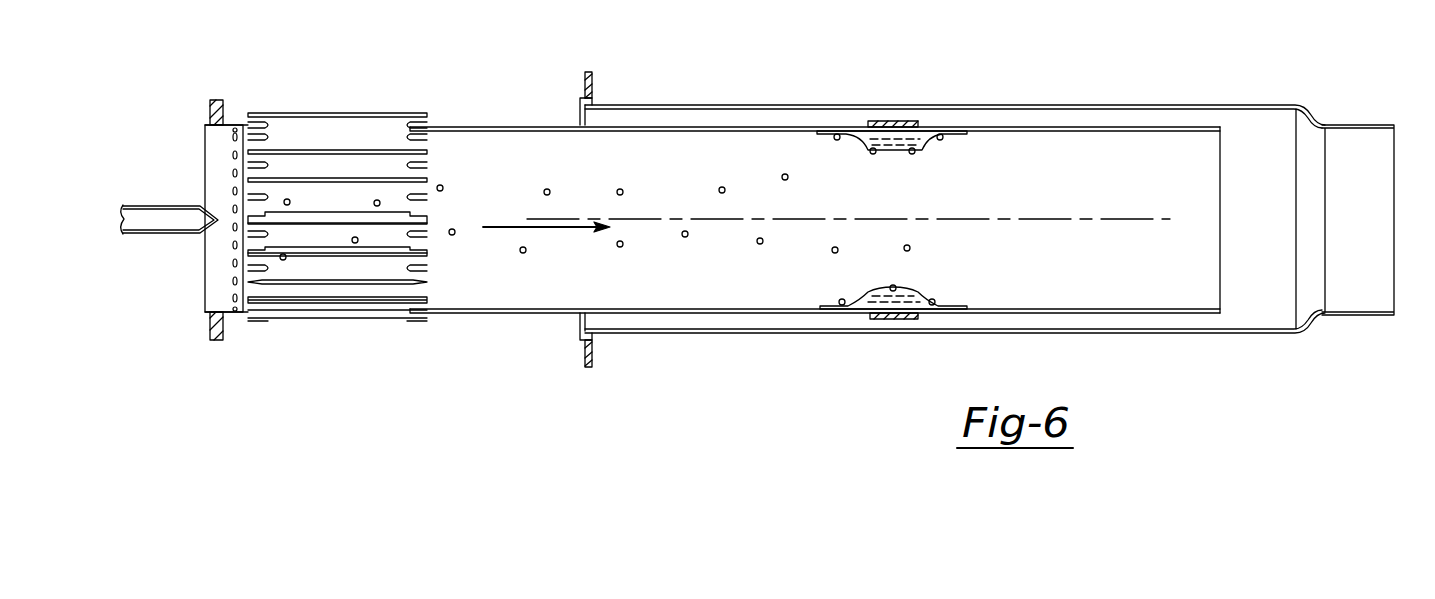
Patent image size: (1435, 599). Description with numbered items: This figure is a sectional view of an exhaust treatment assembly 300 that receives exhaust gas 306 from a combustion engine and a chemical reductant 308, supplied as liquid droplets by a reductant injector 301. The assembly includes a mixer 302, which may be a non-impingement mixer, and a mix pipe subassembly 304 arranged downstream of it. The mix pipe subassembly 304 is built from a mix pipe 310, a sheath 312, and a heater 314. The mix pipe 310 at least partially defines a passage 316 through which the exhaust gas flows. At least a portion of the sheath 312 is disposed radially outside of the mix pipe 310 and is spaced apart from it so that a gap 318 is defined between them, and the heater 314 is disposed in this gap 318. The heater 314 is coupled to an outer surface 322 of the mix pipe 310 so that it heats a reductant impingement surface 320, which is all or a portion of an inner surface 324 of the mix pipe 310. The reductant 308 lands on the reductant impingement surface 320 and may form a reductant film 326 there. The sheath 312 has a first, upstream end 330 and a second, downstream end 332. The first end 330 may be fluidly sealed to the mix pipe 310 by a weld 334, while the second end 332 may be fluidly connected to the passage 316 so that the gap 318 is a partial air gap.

The exhaust treatment assembly 300 is at (1259, 62).
The reductant injector 301 is at (158, 220).
The mixer 302 is at (352, 123).
The mix pipe subassembly 304 is at (799, 108).
The exhaust gas 306 is at (563, 229).
The chemical reductant 308 is at (544, 192).
The mix pipe 310 is at (648, 128).
The sheath 312 is at (980, 105).
The heater 314 is at (887, 123).
The passage 316 is at (510, 170).
The gap 318 is at (707, 117).
The reductant impingement surface 320 is at (1003, 132).
The outer surface 322 is at (1068, 127).
The inner surface 324 is at (1135, 132).
The reductant film 326 is at (883, 314).
The first end 330 is at (580, 333).
The second end 332 is at (1394, 314).
The weld 334 is at (577, 313).